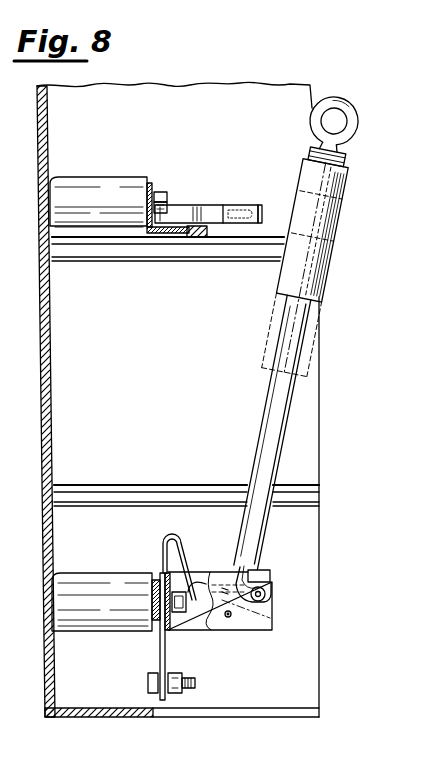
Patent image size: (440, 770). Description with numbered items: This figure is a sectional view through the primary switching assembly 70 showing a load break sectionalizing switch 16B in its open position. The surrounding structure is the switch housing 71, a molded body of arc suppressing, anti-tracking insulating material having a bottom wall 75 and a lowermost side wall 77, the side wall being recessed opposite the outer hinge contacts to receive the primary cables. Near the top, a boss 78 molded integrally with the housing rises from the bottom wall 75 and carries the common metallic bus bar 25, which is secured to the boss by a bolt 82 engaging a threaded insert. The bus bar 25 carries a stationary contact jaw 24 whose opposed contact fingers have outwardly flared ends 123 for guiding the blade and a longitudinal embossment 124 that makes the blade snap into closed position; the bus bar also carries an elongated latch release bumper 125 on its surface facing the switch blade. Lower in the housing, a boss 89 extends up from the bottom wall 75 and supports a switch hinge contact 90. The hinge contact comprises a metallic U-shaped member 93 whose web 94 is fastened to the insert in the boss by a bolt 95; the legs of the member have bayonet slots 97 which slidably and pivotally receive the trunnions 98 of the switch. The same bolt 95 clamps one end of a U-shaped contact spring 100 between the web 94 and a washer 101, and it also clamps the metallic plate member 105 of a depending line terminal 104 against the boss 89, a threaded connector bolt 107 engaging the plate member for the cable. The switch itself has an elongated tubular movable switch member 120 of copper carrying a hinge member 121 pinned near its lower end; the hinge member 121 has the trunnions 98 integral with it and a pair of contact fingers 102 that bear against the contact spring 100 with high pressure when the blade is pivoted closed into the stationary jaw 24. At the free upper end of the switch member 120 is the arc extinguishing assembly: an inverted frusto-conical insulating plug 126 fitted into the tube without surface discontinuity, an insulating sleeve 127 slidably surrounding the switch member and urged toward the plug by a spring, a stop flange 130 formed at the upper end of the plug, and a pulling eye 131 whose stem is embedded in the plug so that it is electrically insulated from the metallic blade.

The primary switching assembly 70 is at (332, 506).
The switch housing 71 is at (310, 448).
The bottom wall 75 is at (42, 412).
The lowermost side wall 77 is at (116, 717).
The boss 78 is at (98, 197).
The bolt 82 is at (158, 192).
The stationary contact jaw 24 is at (200, 200).
The longitudinal embossment 124 is at (232, 207).
The outwardly flared ends 123 is at (261, 213).
The bus bar 25 is at (160, 235).
The latch release bumper 125 is at (197, 240).
The sectionalizing switch 16B is at (248, 444).
The movable switch member 120 is at (272, 432).
The plug 126 is at (343, 193).
The sleeve 127 is at (305, 268).
The stop flange 130 is at (327, 157).
The pulling eye 131 is at (334, 124).
The boss 89 is at (70, 596).
The switch hinge contact 90 is at (289, 660).
The U-shaped member 93 is at (230, 625).
The web 94 is at (166, 630).
The bolt 95 is at (182, 612).
The bayonet slot 97 is at (238, 566).
The trunnion 98 is at (266, 589).
The contact spring 100 is at (190, 543).
The washer 101 is at (152, 590).
The contact finger 102 is at (200, 580).
The line terminal 104 is at (150, 638).
The plate member 105 is at (158, 653).
The connector bolt 107 is at (148, 683).
The hinge member 121 is at (262, 613).